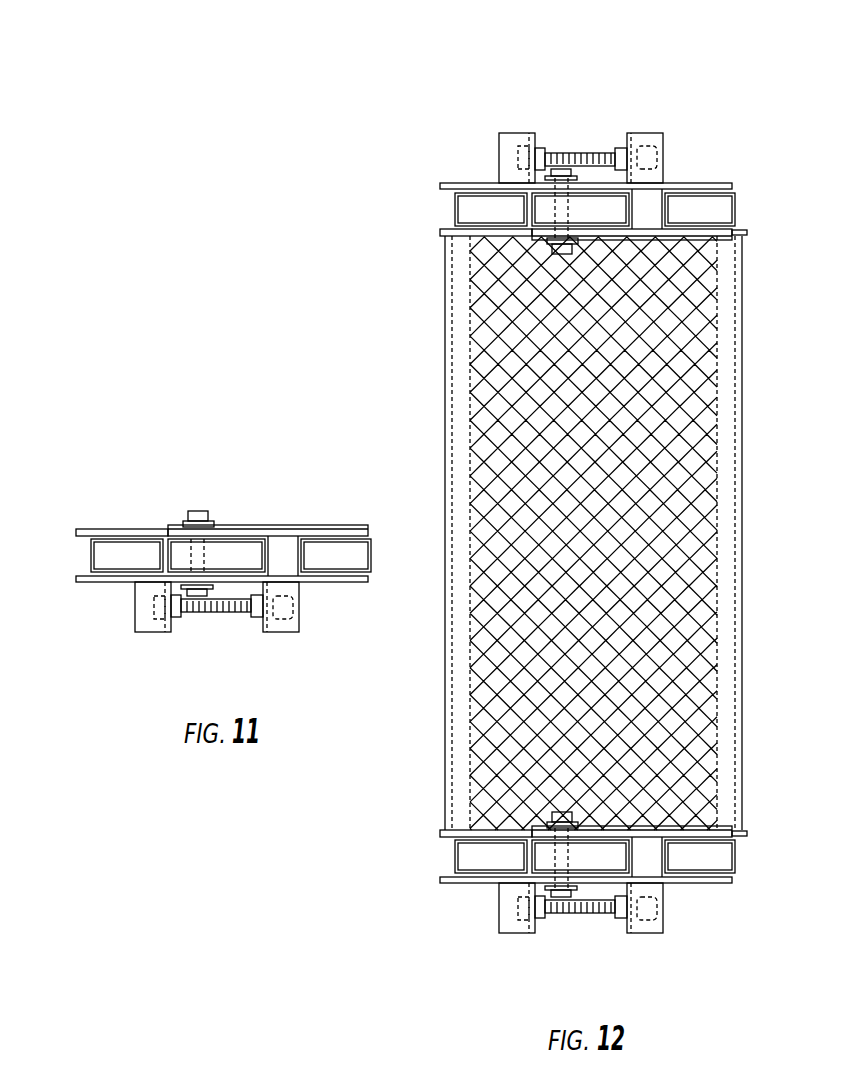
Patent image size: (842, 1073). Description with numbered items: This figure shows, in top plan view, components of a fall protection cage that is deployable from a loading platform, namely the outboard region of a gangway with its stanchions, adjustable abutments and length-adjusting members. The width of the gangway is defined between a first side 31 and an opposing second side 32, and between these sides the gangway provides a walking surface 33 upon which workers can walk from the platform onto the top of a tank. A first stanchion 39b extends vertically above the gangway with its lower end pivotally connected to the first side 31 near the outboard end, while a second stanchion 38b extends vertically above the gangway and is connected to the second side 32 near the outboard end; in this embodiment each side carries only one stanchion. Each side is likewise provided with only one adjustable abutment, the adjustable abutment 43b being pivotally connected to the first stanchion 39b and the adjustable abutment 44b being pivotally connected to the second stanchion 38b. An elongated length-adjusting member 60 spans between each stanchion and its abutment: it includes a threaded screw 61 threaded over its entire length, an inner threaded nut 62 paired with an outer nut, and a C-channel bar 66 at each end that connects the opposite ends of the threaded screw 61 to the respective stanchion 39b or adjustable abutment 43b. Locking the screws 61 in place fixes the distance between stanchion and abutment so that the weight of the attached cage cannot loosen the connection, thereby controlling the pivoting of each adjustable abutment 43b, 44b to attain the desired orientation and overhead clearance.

In FIG. 12, the first side 31 is at (448, 226).
In FIG. 12, the second side 32 is at (445, 838).
In FIG. 12, the walking surface 33 is at (690, 330).
In FIG. 12, the second stanchion 38b is at (450, 865).
In FIG. 11, the first stanchion 39b is at (98, 541).
In FIG. 12, the first stanchion 39b is at (450, 200).
In FIG. 11, the adjustable abutment 43b is at (351, 585).
In FIG. 12, the adjustable abutment 43b is at (742, 210).
In FIG. 12, the adjustable abutment 44b is at (742, 860).
In FIG. 11, the elongated length-adjusting member 60 is at (206, 639).
In FIG. 12, the elongated length-adjusting member 60 is at (581, 512).
In FIG. 11, the threaded screw 61 is at (216, 631).
In FIG. 12, the threaded screw 61 is at (580, 153).
In FIG. 11, the inner threaded nut 62 is at (223, 639).
In FIG. 12, the inner threaded nut 62 is at (544, 148).
In FIG. 11, the C-channel bar 66 is at (206, 623).
In FIG. 12, the C-channel bar 66 is at (516, 133).